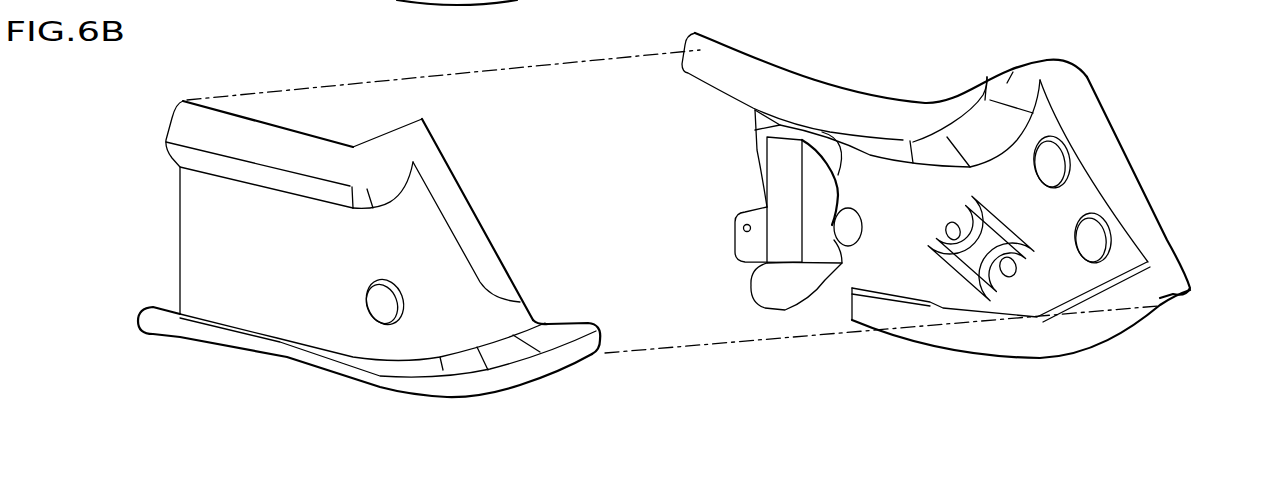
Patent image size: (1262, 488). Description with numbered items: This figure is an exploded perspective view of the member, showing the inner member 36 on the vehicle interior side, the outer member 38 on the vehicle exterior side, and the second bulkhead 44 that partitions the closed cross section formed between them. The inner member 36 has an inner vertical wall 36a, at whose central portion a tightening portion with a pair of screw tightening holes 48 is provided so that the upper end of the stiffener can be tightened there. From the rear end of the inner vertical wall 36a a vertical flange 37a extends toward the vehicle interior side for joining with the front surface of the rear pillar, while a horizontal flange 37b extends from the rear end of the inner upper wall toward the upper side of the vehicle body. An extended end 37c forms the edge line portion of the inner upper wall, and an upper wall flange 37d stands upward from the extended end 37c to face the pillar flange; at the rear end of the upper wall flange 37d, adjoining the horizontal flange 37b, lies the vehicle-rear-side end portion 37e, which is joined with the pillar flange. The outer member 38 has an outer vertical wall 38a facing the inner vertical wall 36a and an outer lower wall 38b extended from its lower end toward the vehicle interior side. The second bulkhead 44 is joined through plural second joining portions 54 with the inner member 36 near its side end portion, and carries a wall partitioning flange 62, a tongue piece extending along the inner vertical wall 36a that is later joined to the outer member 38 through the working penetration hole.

The inner member 36 is at (1092, 67).
The inner vertical wall 36a is at (912, 268).
The vertical flange 37a is at (1110, 165).
The horizontal flange 37b is at (1007, 83).
The extended end 37c is at (778, 126).
The upper wall flange 37d is at (782, 98).
The vehicle-rear-side end portion 37e is at (903, 125).
The outer member 38 is at (158, 237).
The outer vertical wall 38a is at (302, 293).
The outer lower wall 38b is at (350, 367).
The second bulkhead 44 is at (722, 236).
The screw tightening holes 48 is at (950, 242).
The second joining portions 54 is at (840, 170).
The wall partitioning flange 62 is at (743, 250).